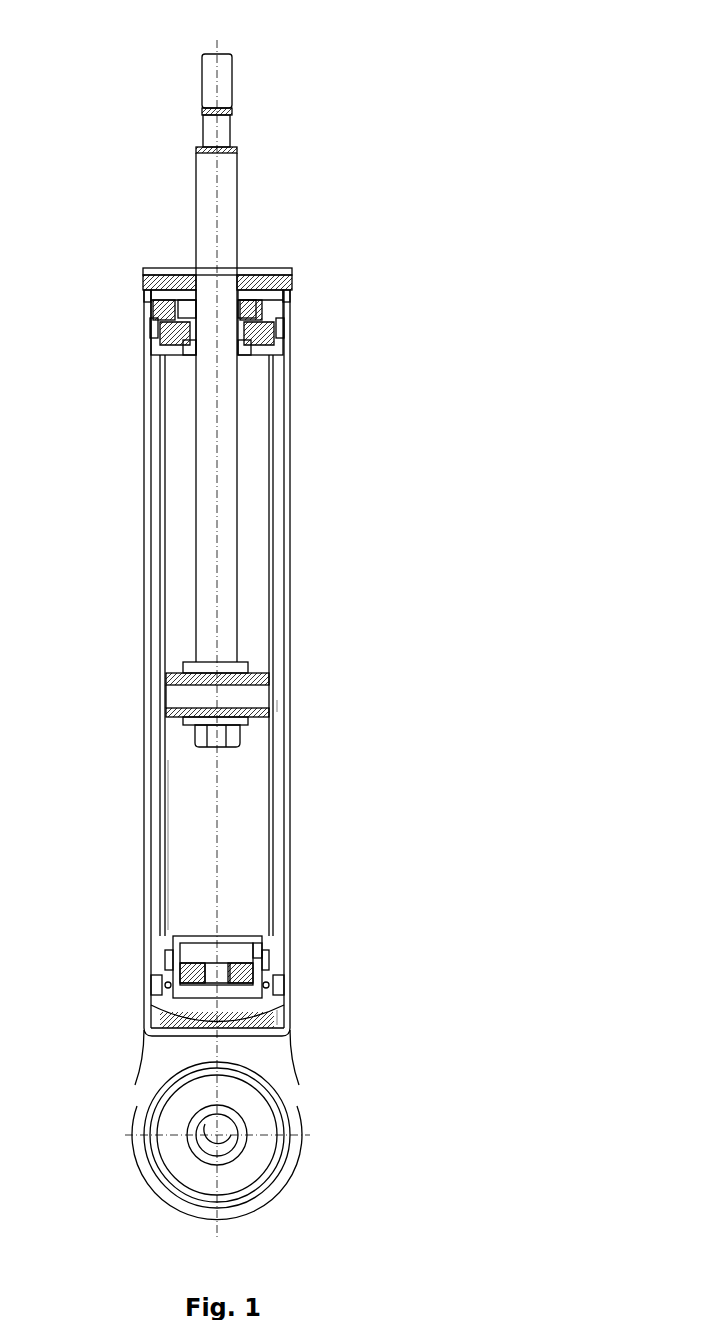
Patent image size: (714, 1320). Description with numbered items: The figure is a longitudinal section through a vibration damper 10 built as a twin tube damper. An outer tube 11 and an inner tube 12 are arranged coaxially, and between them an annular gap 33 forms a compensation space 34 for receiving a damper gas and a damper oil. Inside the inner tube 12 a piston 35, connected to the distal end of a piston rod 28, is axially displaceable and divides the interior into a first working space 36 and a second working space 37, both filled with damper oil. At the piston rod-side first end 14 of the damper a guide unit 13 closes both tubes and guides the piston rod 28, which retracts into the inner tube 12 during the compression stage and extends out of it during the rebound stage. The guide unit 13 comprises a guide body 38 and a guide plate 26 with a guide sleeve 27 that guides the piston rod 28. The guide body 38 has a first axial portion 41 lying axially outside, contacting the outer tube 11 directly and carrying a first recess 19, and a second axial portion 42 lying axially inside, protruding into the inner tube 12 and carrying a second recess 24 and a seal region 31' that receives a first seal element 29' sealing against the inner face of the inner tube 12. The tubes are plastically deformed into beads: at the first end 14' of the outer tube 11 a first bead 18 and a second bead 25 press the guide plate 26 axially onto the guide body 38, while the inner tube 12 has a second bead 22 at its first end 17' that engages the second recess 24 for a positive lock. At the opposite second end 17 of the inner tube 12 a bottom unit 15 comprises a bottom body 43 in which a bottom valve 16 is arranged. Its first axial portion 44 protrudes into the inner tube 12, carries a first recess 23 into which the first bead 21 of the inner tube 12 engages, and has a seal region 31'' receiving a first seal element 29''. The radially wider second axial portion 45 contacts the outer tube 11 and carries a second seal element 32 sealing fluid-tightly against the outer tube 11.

The vibration damper 10 is at (530, 88).
The outer tube 11 is at (290, 538).
The inner tube 12 is at (273, 608).
The guide unit 13 is at (172, 247).
The first end 14 is at (320, 245).
The first end of the outer tube 14' is at (340, 271).
The bottom unit 15 is at (203, 903).
The bottom valve 16 is at (290, 950).
The second end of the inner tube 17 is at (328, 996).
The first end of the inner tube 17' is at (335, 325).
The first bead 18 is at (292, 305).
The first recess 19 is at (292, 298).
The first bead 21 is at (290, 970).
The second bead 22 is at (292, 322).
The first recess 23 is at (170, 982).
The second recess 24 is at (150, 322).
The second bead 25 is at (150, 277).
The guide plate 26 is at (258, 274).
The guide sleeve 27 is at (190, 274).
The piston rod 28 is at (240, 157).
The first seal element 29' is at (116, 368).
The first seal element 29'' is at (136, 955).
The seal region 31' is at (125, 357).
The seal region 31'' is at (289, 935).
The second seal element 32 is at (148, 992).
The annular gap 33 is at (284, 478).
The compensation space 34 is at (280, 704).
The piston 35 is at (166, 678).
The first working space 36 is at (165, 565).
The second working space 37 is at (165, 795).
The guide body 38 is at (150, 287).
The first axial portion 41 is at (150, 310).
The second axial portion 42 is at (183, 358).
The bottom body 43 is at (148, 1025).
The first axial portion 44 is at (262, 936).
The second axial portion 45 is at (285, 1055).